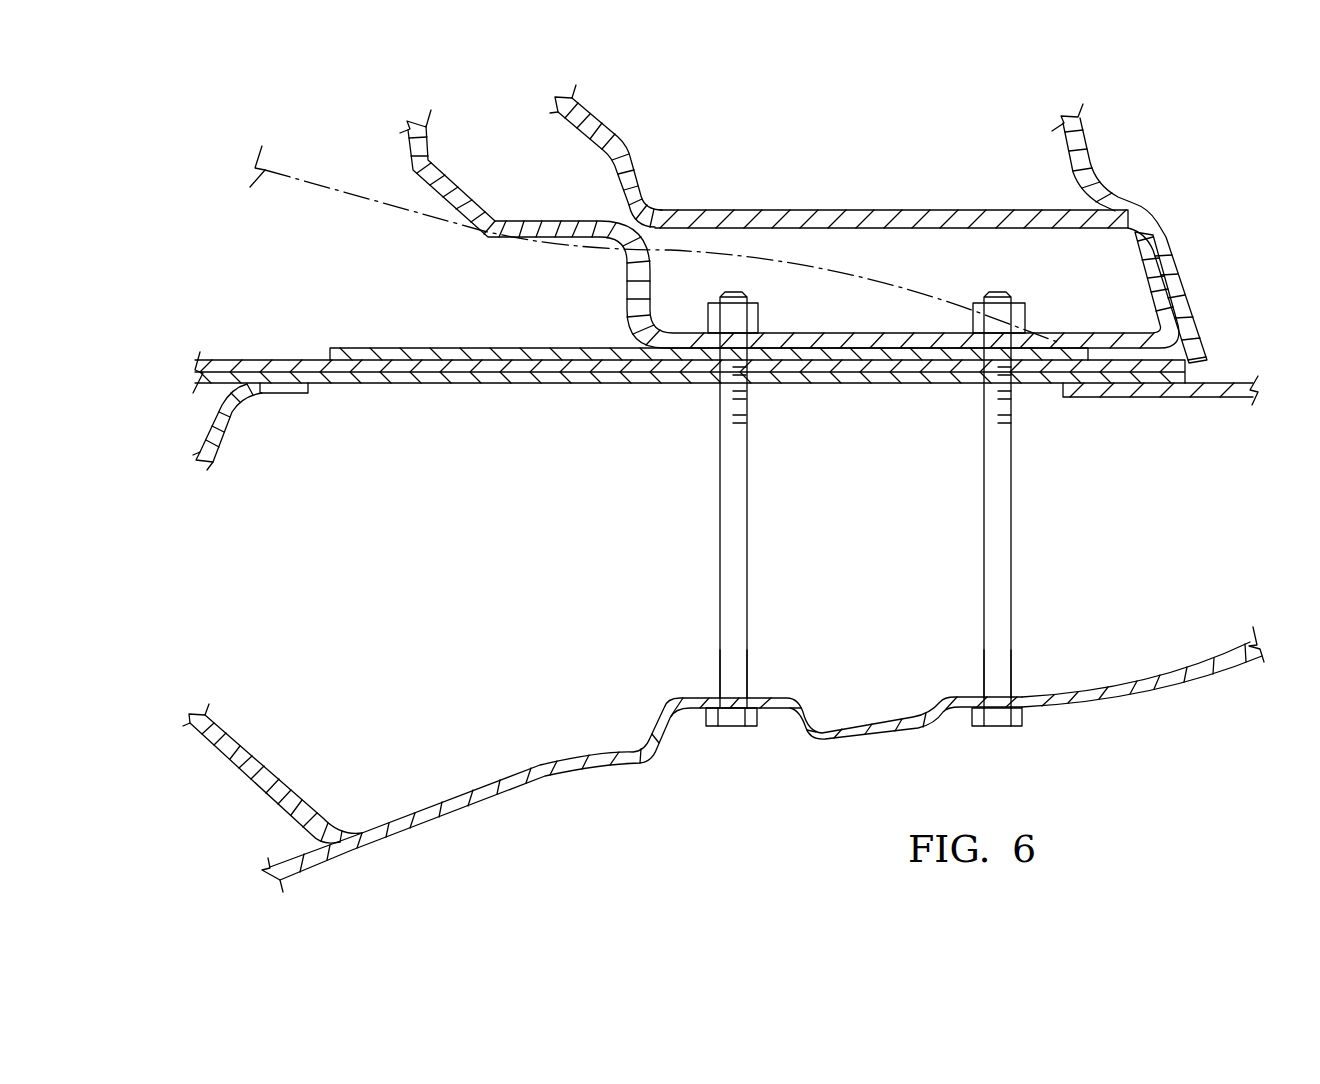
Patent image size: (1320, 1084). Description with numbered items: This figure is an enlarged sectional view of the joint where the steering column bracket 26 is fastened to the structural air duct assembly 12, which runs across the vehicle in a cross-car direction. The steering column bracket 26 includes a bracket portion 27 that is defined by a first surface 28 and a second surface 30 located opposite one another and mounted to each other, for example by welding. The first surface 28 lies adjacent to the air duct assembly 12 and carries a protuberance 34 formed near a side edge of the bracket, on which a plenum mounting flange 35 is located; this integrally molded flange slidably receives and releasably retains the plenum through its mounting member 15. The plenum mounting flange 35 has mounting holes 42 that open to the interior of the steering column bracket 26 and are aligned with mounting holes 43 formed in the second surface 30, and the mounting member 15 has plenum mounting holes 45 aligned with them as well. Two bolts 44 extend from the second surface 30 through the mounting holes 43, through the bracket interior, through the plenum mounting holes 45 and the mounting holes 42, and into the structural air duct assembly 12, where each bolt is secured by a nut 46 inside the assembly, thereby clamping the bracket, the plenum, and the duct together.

The structural air duct assembly 12 is at (1128, 200).
The mounting member 15 is at (262, 358).
The steering column bracket 26 is at (578, 770).
The bracket portion 27 is at (387, 373).
The first surface 28 is at (1223, 383).
The second surface 30 is at (1150, 688).
The protuberance 34 is at (232, 432).
The plenum mounting flange 35 is at (460, 347).
The mounting hole 42 is at (743, 362).
The mounting hole 43 is at (743, 708).
The bolt 44 is at (717, 652).
The plenum mounting hole 45 is at (725, 384).
The nut 46 is at (712, 302).